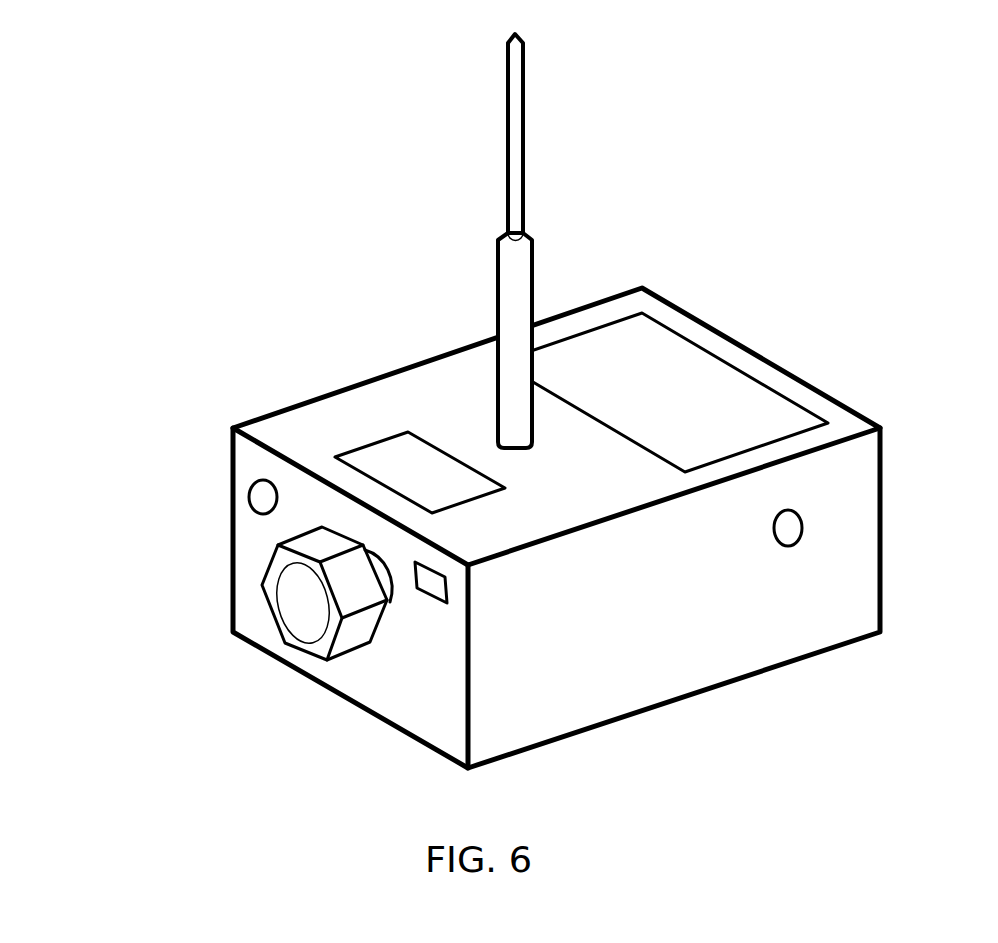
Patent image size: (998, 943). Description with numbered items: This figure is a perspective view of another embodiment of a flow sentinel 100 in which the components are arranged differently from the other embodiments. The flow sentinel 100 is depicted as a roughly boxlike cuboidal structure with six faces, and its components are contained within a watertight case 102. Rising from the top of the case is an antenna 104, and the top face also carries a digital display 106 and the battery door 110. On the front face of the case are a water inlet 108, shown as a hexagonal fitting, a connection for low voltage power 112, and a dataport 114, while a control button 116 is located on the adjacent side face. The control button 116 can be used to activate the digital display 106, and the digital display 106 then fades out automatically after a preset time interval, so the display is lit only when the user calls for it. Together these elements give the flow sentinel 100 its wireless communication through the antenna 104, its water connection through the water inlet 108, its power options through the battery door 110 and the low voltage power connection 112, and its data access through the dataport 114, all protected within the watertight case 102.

The flow sentinel 100 is at (560, 449).
The watertight case 102 is at (738, 585).
The antenna 104 is at (517, 263).
The digital display 106 is at (658, 357).
The water inlet 108 is at (305, 612).
The battery door 110 is at (390, 452).
The connection for low voltage power 112 is at (268, 495).
The dataport 114 is at (442, 588).
The control button 116 is at (795, 520).